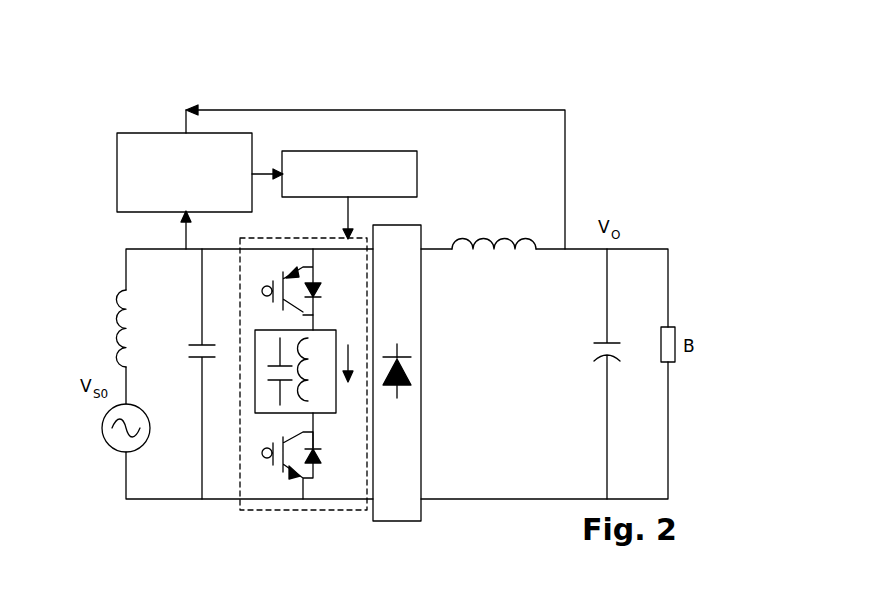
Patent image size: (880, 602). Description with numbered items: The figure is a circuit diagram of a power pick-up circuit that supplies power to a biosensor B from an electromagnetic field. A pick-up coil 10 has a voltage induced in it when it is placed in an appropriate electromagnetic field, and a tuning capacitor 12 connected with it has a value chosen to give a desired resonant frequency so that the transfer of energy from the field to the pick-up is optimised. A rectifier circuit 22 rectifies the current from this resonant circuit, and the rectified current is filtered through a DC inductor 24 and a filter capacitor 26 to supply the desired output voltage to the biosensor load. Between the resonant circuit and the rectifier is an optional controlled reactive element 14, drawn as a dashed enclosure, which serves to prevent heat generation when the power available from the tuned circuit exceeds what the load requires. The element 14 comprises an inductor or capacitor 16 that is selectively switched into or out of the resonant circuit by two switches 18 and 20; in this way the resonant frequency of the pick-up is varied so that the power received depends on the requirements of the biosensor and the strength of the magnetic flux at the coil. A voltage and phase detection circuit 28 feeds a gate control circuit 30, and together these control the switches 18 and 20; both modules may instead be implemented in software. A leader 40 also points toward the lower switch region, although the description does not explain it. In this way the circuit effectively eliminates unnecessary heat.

The pick-up coil 10 is at (116, 330).
The tuning capacitor 12 is at (199, 343).
The controlled reactive element 14 is at (302, 510).
The inductor or capacitor 16 is at (255, 370).
The switch 18 is at (262, 452).
The switch 20 is at (262, 292).
The rectifier circuit 22 is at (421, 512).
The DC inductor 24 is at (502, 240).
The filter capacitor 26 is at (601, 342).
The voltage and phase detection circuit 28 is at (148, 133).
The gate control circuit 30 is at (418, 180).
The current node 40 is at (320, 437).